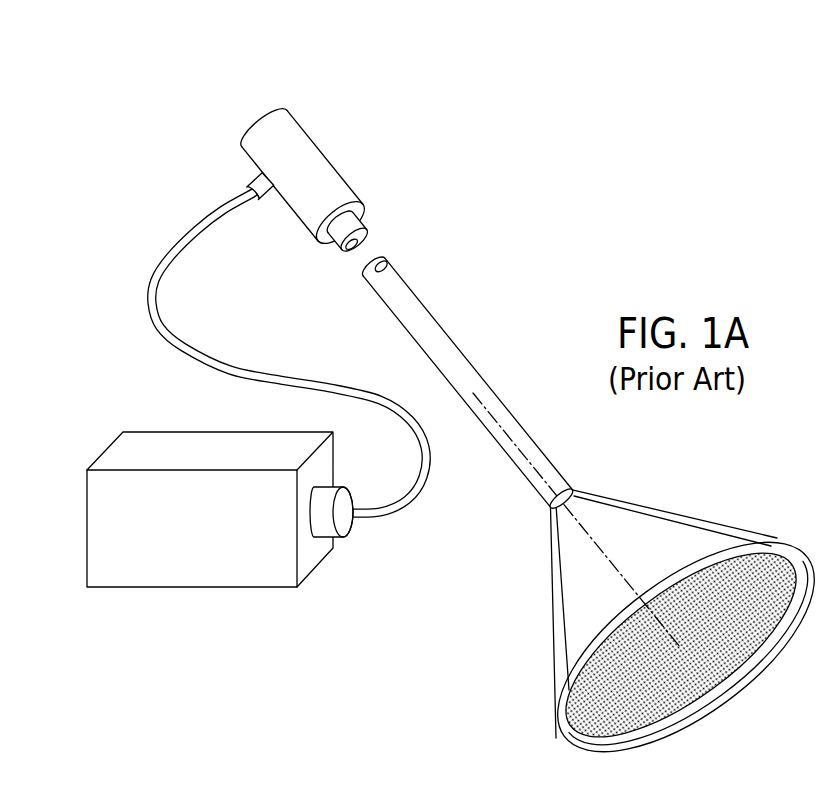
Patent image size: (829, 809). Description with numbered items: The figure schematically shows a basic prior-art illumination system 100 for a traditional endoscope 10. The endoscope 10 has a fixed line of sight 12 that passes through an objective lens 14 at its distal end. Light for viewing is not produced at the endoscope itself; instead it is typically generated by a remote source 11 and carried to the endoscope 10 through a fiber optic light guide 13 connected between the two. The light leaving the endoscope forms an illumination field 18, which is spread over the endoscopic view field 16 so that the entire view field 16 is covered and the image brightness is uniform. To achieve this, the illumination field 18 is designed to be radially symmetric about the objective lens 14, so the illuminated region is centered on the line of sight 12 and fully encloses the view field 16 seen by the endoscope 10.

The illumination system 100 is at (190, 86).
The endoscope 10 is at (468, 357).
The remote source 11 is at (203, 577).
The line of sight 12 is at (593, 543).
The fiber optic light guide 13 is at (195, 230).
The objective lens 14 is at (573, 502).
The view field 16 is at (668, 690).
The illumination field 18 is at (550, 685).